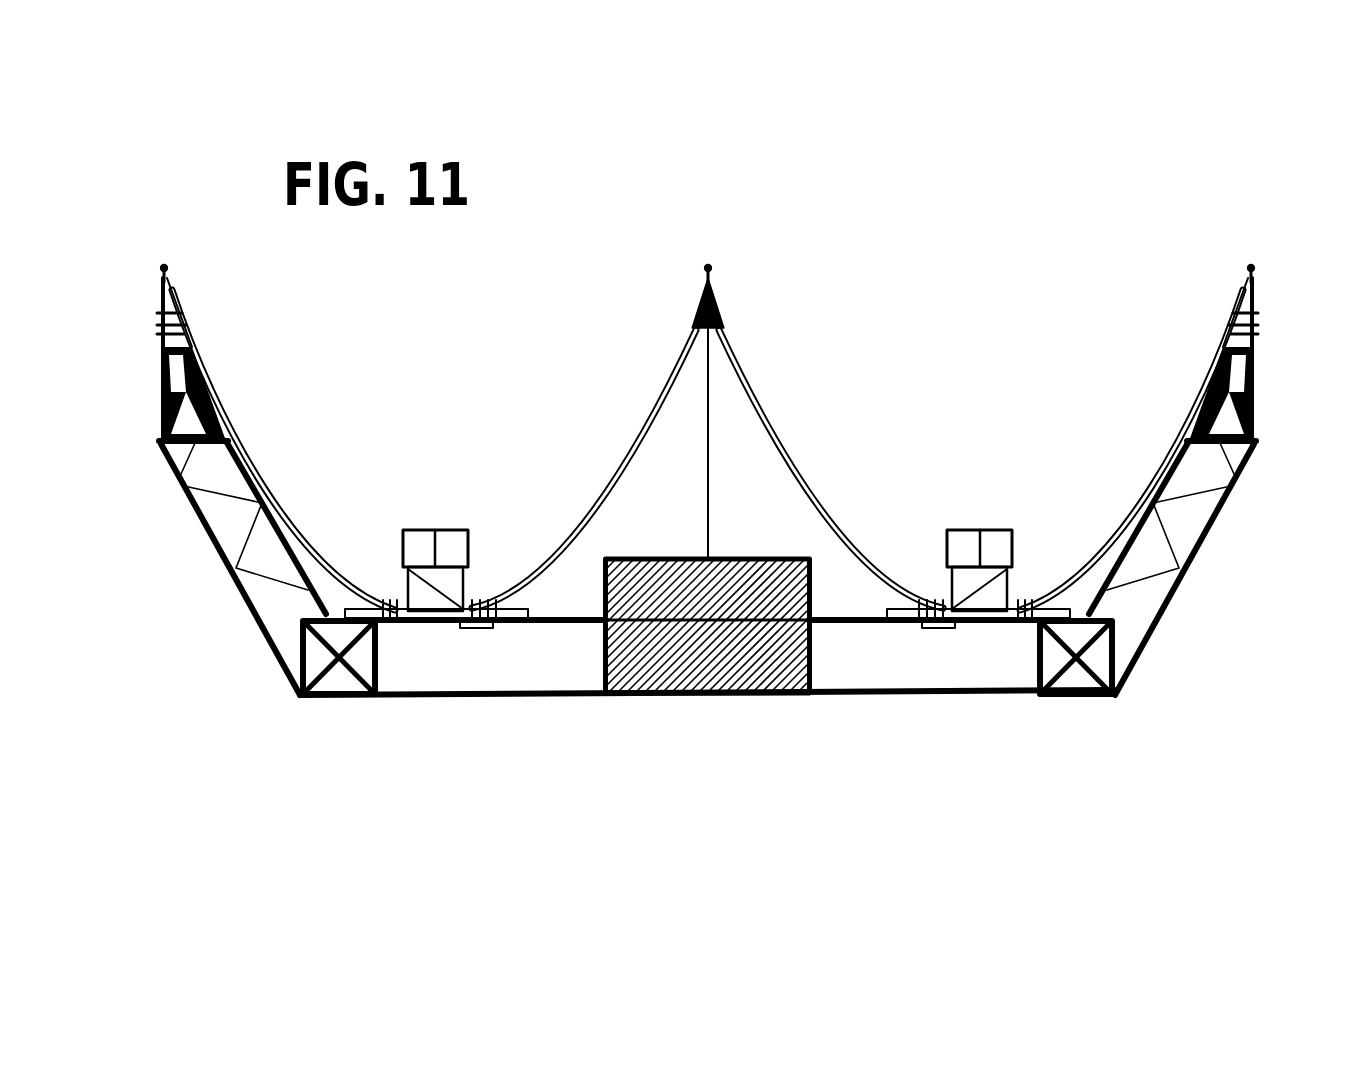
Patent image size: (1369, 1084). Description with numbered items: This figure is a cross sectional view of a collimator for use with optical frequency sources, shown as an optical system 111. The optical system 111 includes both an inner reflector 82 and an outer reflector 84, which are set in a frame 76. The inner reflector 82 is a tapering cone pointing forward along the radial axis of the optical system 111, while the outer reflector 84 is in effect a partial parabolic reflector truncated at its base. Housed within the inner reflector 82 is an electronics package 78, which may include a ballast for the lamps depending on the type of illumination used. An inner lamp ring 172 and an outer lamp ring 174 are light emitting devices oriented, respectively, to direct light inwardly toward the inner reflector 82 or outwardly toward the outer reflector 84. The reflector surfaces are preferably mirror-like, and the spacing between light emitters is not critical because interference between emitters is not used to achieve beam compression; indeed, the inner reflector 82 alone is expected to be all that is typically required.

The optical system 111 is at (1172, 158).
The frame 76 is at (225, 557).
The electronics package 78 is at (654, 738).
The inner reflector 82 is at (831, 469).
The outer reflector 84 is at (1131, 450).
The inner lamp ring 172 is at (473, 535).
The outer lamp ring 174 is at (426, 526).